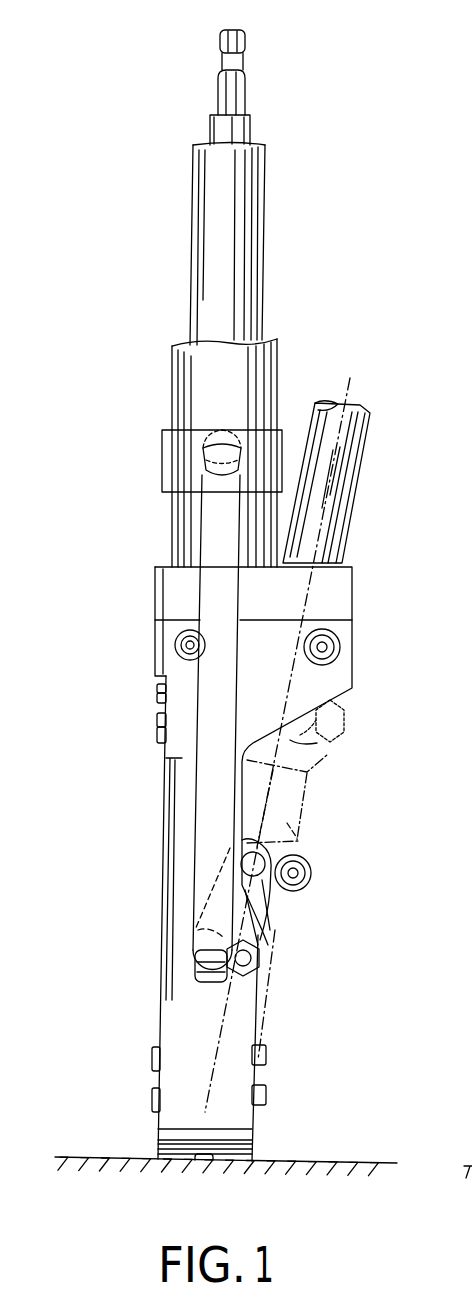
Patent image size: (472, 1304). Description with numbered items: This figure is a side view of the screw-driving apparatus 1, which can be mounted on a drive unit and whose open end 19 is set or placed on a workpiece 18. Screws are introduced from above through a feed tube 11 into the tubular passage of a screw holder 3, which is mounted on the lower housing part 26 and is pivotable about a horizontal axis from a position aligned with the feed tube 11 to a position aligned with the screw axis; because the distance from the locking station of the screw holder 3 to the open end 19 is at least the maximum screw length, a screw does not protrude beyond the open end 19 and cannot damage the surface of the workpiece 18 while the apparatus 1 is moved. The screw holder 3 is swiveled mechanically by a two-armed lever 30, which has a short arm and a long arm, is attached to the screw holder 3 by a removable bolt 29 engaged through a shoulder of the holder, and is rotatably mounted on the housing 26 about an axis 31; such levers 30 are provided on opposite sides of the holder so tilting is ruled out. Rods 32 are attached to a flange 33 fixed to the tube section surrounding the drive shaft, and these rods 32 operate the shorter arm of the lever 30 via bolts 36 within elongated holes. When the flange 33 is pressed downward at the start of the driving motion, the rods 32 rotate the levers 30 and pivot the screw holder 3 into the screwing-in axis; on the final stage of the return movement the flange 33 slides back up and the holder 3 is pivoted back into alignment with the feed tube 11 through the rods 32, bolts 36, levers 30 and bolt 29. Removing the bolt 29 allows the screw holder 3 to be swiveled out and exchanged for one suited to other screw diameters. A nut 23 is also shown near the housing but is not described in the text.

The apparatus 1 is at (183, 305).
The feed tube 11 is at (365, 437).
The flange 33 is at (180, 470).
The rods 32 is at (212, 792).
The bolts 36 is at (198, 972).
The axis 31 is at (255, 980).
The screw holder 3 is at (282, 823).
The nut 23 is at (337, 733).
The bolt 29 is at (298, 893).
The two-armed lever 30 is at (275, 920).
The lower housing part 26 is at (228, 1107).
The open end 19 is at (240, 1155).
The workpiece 18 is at (108, 1158).